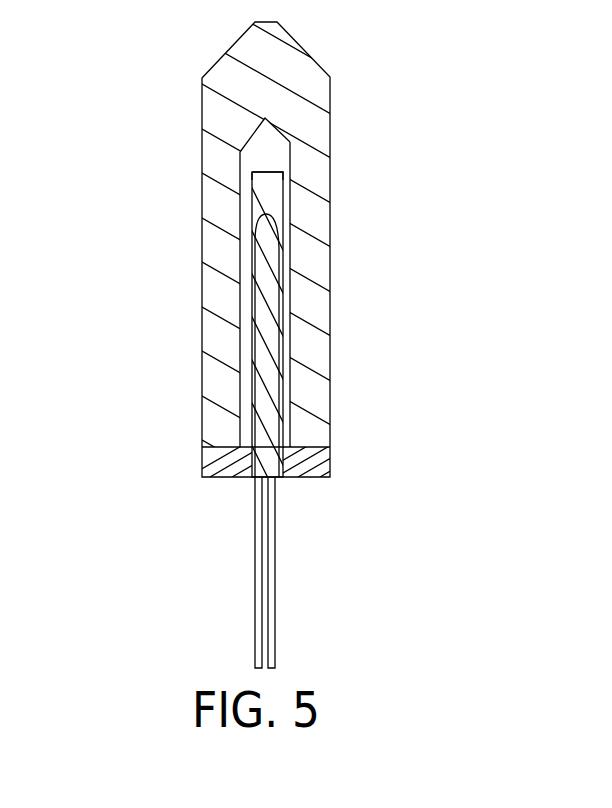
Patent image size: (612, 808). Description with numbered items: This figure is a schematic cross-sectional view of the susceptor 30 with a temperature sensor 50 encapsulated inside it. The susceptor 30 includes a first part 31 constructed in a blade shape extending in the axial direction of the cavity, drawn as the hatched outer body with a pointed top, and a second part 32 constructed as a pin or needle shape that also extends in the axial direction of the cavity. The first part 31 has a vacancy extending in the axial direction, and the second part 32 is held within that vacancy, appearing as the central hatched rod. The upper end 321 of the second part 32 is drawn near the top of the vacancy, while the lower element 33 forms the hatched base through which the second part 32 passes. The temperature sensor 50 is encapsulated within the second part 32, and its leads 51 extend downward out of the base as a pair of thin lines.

The susceptor 30 is at (255, 334).
The first part 31 is at (307, 130).
The second part 32 is at (321, 344).
The top end of rod 321 is at (287, 194).
The bottom plate 33 is at (312, 463).
The temperature sensor 50 is at (280, 365).
The wires 51 is at (270, 563).